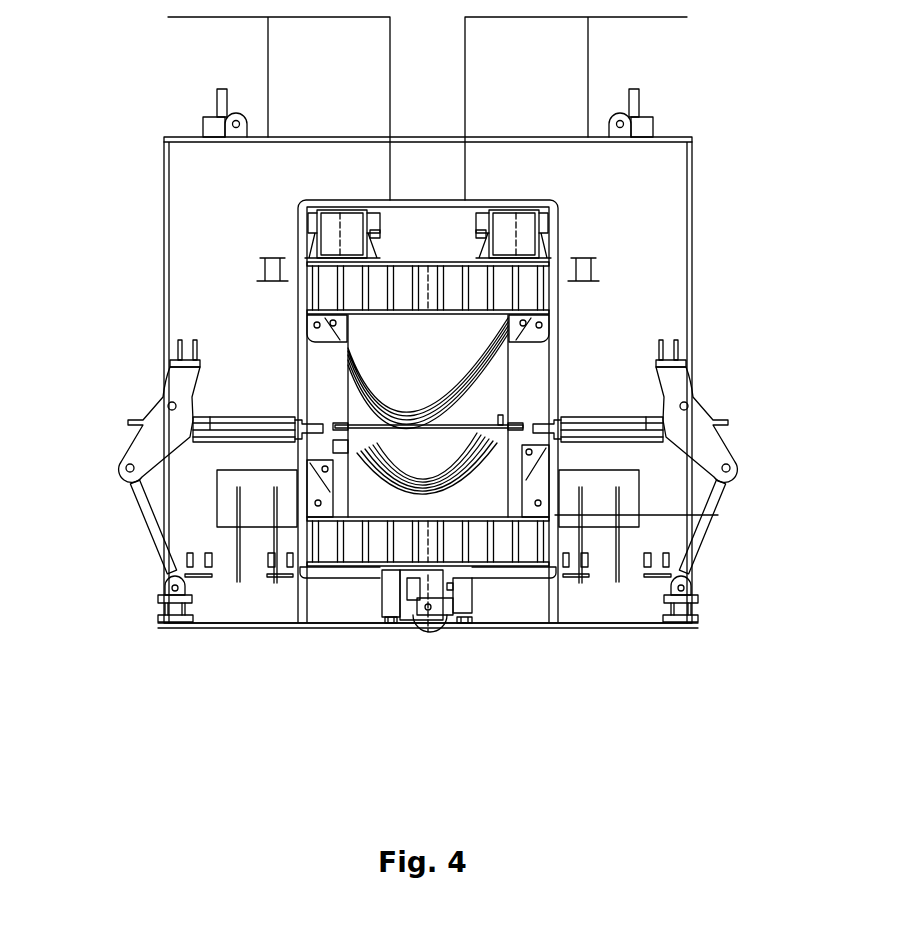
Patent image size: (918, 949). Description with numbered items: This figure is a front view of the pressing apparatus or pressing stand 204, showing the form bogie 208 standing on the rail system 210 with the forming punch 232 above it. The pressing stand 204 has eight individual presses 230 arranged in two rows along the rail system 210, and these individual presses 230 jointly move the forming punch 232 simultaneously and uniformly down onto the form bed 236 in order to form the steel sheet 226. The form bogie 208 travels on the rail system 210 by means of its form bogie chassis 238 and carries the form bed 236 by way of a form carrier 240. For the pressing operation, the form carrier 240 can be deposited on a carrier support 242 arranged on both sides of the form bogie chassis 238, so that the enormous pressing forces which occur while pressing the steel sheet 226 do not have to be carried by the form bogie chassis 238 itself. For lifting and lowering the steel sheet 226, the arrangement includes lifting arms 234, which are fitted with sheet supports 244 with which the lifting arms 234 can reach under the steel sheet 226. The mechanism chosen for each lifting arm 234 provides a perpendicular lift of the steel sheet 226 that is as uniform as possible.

The pressing stand 204 is at (727, 147).
The form bogie 208 is at (430, 653).
The rail system 210 is at (462, 630).
The steel sheet 226 is at (505, 405).
The individual presses 230 is at (335, 227).
The forming punch 232 is at (428, 373).
The lifting arms 234 is at (145, 535).
The form bed 236 is at (430, 471).
The form bogie chassis 238 is at (385, 596).
The form carrier 240 is at (330, 543).
The carrier support 242 is at (320, 585).
The sheet supports 244 is at (322, 392).